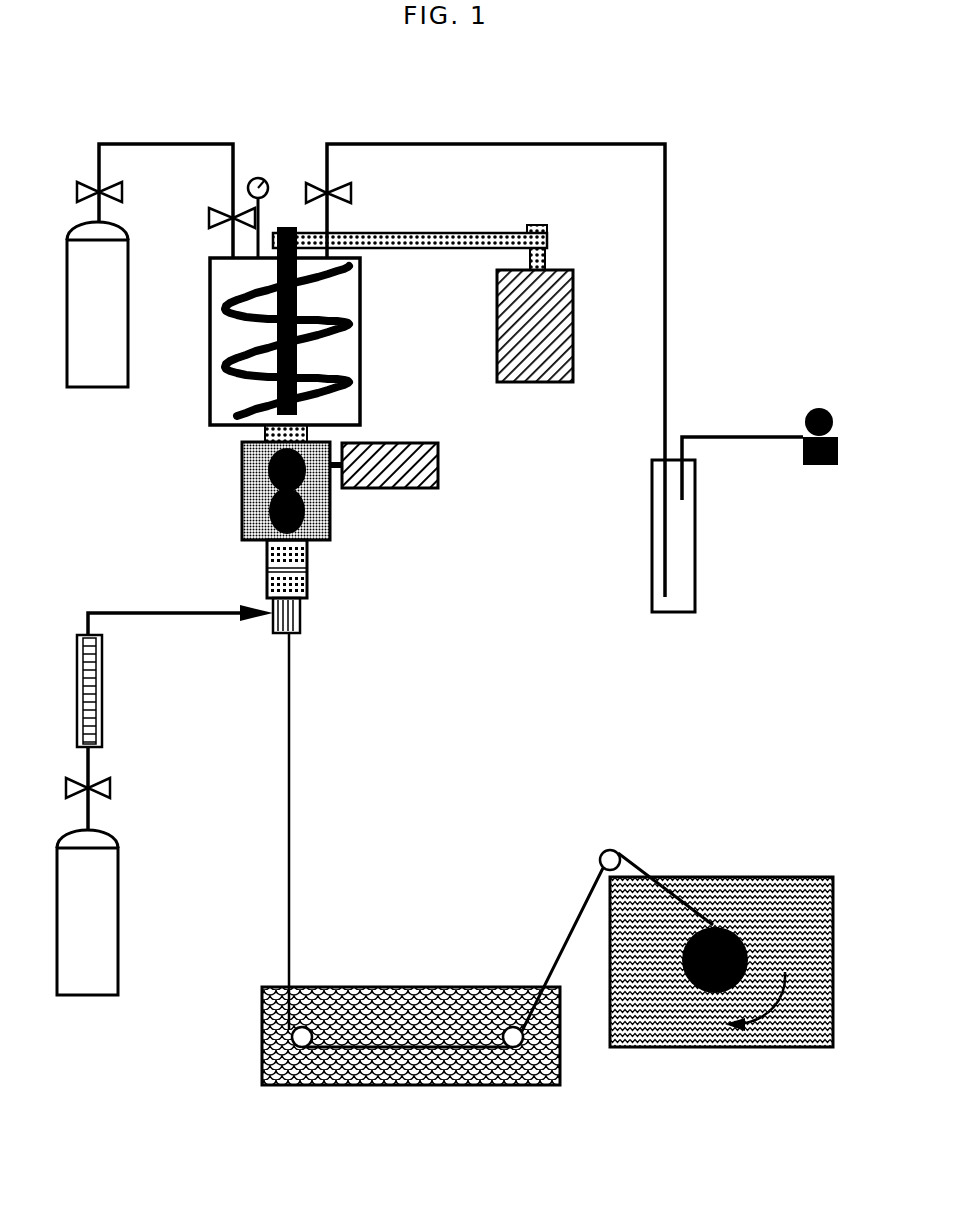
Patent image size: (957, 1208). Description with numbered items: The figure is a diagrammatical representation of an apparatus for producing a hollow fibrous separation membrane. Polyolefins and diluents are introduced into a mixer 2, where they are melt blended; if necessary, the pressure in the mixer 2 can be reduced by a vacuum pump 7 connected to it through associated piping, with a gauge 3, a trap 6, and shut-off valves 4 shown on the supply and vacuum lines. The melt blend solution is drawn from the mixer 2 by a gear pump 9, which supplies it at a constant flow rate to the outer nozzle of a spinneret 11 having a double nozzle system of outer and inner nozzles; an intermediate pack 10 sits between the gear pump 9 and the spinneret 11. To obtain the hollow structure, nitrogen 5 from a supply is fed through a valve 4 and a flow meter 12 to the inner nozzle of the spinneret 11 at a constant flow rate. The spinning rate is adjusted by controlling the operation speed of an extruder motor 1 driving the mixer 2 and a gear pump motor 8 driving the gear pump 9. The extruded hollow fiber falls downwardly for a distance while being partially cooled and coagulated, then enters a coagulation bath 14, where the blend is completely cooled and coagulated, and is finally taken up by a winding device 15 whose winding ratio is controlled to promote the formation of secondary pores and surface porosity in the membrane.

The extruder motor 1 is at (575, 363).
The mixer 2 is at (362, 354).
The pressure gauge 3 is at (269, 186).
The valve 4 is at (124, 193).
The nitrogen 5 is at (130, 316).
The trap 6 is at (697, 596).
The vacuum pump 7 is at (833, 467).
The gear pump motor 8 is at (440, 471).
The gear pump 9 is at (241, 482).
The filter pack 10 is at (310, 568).
The spinneret 11 is at (302, 615).
The flow meter 12 is at (104, 730).
The coagulation bath 14 is at (540, 1088).
The winding device 15 is at (815, 1050).